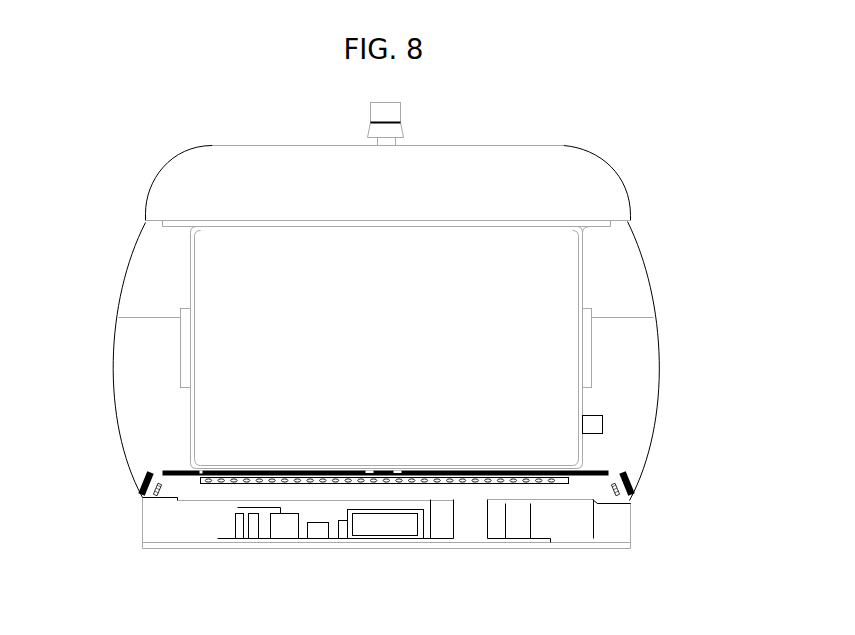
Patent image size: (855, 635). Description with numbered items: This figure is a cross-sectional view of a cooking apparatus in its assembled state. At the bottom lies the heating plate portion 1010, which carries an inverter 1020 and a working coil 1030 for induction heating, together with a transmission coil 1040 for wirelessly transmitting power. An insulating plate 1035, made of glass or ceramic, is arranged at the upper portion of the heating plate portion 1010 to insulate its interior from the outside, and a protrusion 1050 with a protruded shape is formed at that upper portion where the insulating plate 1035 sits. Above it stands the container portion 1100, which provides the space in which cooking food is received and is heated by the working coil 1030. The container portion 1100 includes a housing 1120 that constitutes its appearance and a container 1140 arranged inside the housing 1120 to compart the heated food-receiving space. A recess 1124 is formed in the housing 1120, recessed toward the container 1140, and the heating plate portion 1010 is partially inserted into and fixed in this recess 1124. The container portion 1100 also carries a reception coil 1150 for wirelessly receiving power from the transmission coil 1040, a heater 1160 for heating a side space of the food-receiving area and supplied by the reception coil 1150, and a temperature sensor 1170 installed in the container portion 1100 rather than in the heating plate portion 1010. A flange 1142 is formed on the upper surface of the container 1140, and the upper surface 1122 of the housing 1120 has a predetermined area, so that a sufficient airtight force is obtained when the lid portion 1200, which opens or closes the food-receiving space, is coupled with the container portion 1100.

The lid portion 1200 is at (705, 100).
The container portion 1100 is at (395, 360).
The heating plate portion 1010 is at (408, 535).
The housing 1120 is at (133, 303).
The upper surface of the housing 1122 is at (611, 224).
The recess 1124 is at (163, 472).
The container 1140 is at (190, 410).
The flange 1142 is at (593, 226).
The heater 1160 is at (183, 360).
The temperature sensor 1170 is at (596, 425).
The reception coil 1150 is at (140, 483).
The protrusion 1050 is at (141, 500).
The inverter 1020 is at (283, 532).
The working coil 1030 is at (470, 484).
The insulating plate 1035 is at (413, 476).
The transmission coil 1040 is at (610, 503).